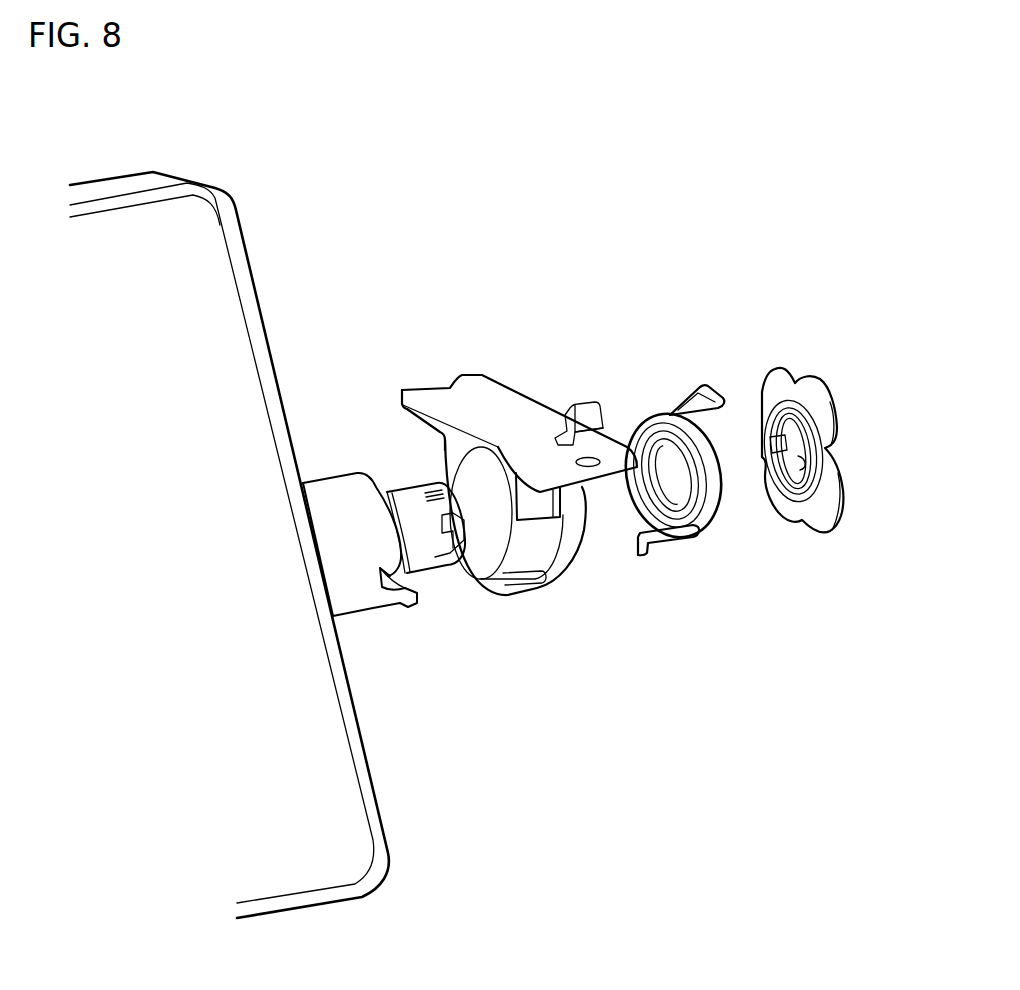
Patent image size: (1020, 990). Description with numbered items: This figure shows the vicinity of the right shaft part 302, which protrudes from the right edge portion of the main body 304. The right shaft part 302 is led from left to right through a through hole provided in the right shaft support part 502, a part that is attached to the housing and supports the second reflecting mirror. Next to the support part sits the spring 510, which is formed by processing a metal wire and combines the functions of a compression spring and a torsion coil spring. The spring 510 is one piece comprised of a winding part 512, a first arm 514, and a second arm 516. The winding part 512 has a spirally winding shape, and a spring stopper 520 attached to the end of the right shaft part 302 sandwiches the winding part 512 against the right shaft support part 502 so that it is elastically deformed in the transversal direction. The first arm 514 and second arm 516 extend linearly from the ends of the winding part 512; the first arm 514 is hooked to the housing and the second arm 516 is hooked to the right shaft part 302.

The right shaft part 302 is at (356, 613).
The main body 304 is at (168, 176).
The right shaft support part 502 is at (487, 371).
The spring 510 is at (701, 472).
The winding part 512 is at (702, 497).
The first arm 514 is at (710, 388).
The second arm 516 is at (673, 536).
The spring stopper 520 is at (830, 402).